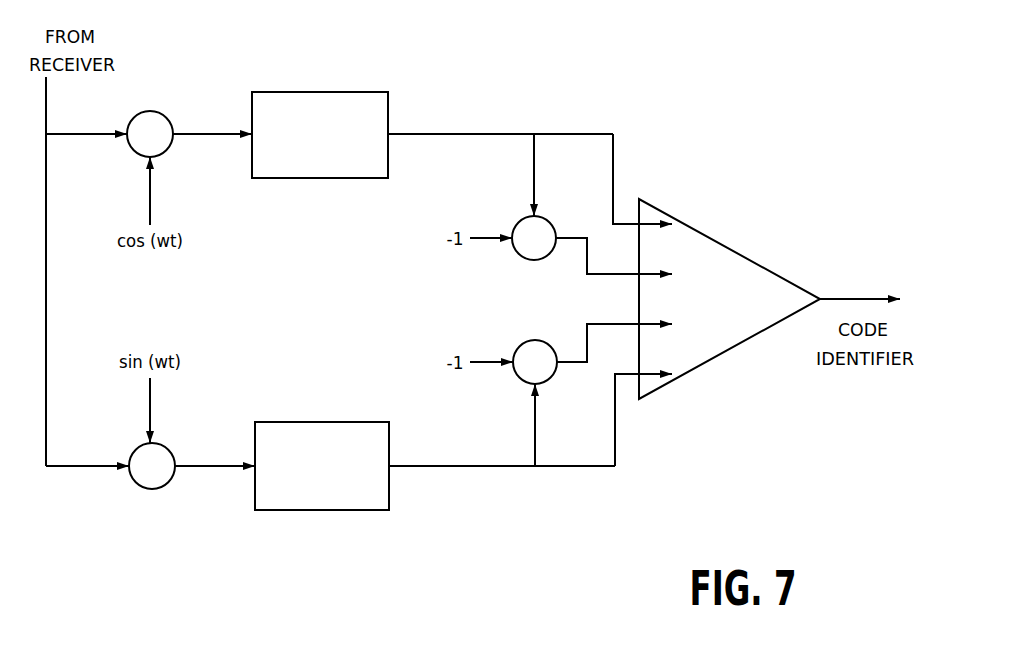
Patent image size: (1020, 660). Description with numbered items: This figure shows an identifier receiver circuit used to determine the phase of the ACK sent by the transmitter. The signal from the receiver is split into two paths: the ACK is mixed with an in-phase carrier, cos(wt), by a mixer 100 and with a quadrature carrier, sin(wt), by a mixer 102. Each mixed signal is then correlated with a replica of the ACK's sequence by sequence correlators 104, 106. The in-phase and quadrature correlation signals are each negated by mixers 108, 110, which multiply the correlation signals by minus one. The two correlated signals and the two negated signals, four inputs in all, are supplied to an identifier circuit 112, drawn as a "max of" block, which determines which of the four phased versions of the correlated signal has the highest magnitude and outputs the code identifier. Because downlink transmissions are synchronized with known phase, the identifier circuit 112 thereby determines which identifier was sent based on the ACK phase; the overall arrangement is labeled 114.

The mixer 100 is at (155, 112).
The mixer 102 is at (143, 487).
The sequence correlator 104 is at (302, 92).
The sequence correlator 106 is at (337, 512).
The mixer 108 is at (520, 257).
The mixer 110 is at (520, 380).
The identifier circuit 112 is at (717, 240).
The code identification circuit 114 is at (684, 110).